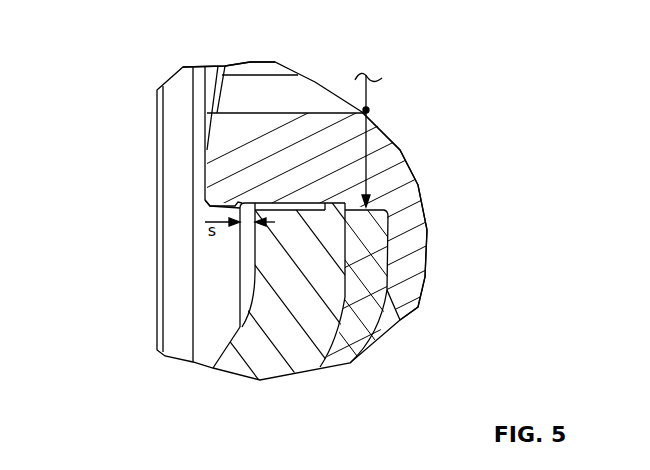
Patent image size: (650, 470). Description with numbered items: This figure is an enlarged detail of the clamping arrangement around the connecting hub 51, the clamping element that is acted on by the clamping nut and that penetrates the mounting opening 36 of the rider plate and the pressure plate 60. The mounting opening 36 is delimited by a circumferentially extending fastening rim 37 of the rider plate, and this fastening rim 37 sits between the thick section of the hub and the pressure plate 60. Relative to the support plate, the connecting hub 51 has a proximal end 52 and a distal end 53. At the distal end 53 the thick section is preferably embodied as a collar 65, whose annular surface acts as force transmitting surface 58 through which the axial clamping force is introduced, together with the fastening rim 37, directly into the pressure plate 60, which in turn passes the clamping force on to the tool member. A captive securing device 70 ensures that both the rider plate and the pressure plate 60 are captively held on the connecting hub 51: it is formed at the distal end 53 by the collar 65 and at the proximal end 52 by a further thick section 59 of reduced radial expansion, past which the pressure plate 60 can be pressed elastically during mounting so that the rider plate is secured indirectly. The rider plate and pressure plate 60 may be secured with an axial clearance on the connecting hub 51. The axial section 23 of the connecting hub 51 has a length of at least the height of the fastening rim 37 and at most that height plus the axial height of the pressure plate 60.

The captive securing device 70 is at (263, 180).
The connecting hub 51 is at (255, 113).
The axial section 23 is at (292, 177).
The proximal end 52 is at (217, 132).
The further thick section 59 is at (215, 197).
The mounting opening 36 is at (366, 110).
The distal end 53 is at (420, 188).
The collar 65 is at (415, 255).
The force transmitting surface 58 is at (383, 240).
The pressure plate 60 is at (278, 278).
The fastening rim 37 is at (363, 257).